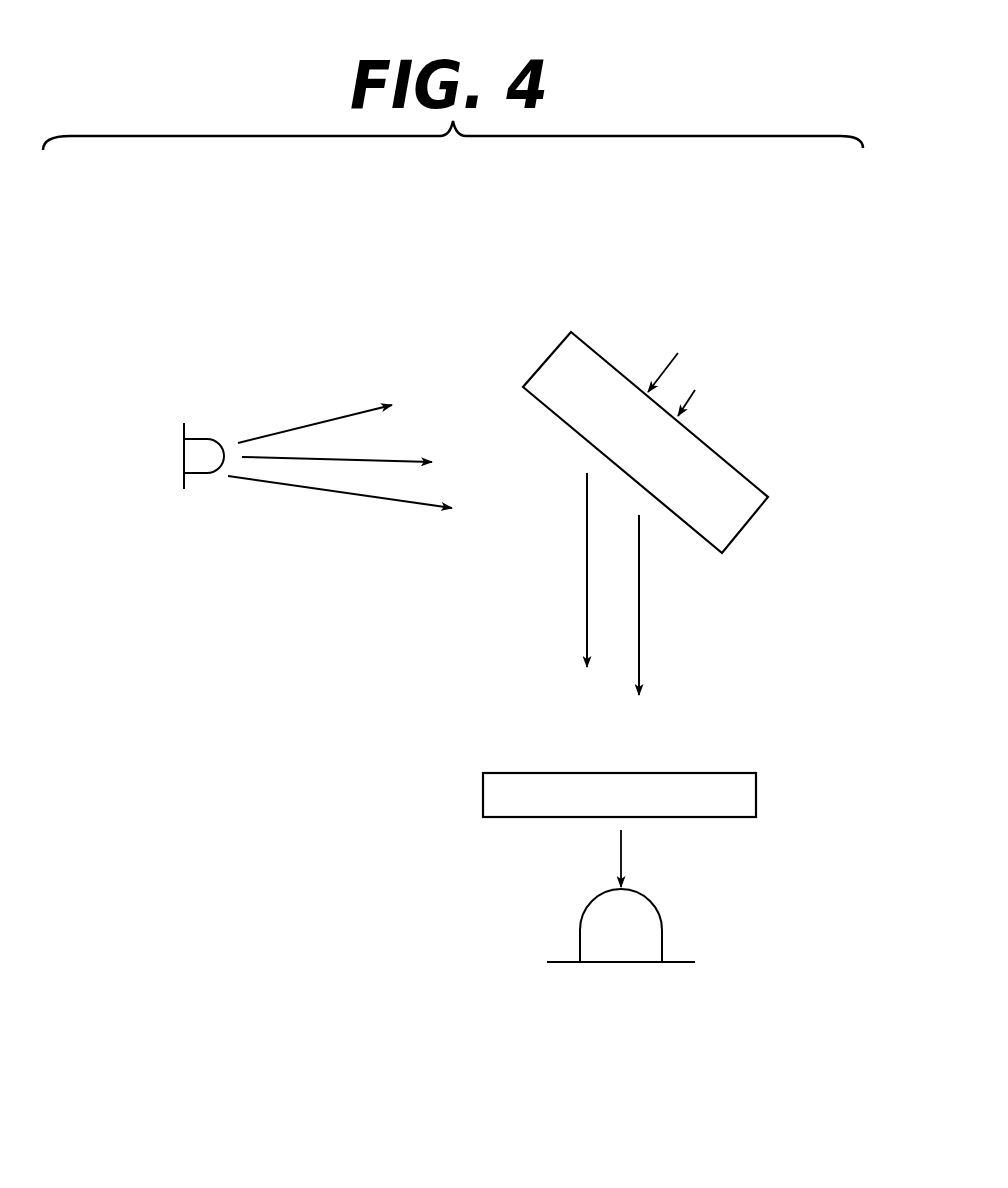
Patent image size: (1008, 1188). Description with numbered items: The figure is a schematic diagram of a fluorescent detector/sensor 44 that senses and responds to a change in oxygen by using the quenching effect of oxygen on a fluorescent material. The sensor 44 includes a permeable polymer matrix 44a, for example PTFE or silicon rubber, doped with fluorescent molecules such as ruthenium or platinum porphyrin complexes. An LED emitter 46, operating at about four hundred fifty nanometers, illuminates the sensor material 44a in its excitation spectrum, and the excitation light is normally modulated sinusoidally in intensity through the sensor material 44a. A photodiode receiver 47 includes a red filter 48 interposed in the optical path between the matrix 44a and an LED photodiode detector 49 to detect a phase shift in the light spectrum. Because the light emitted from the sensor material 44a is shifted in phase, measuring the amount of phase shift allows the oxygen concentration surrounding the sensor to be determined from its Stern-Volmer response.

The fluorescent detector/sensor 44 is at (263, 318).
The permeable polymer matrix 44a is at (715, 447).
The LED emitter 46 is at (165, 485).
The photodiode receiver 47 is at (360, 822).
The red filter 48 is at (662, 928).
The LED photodiode detector 49 is at (756, 800).